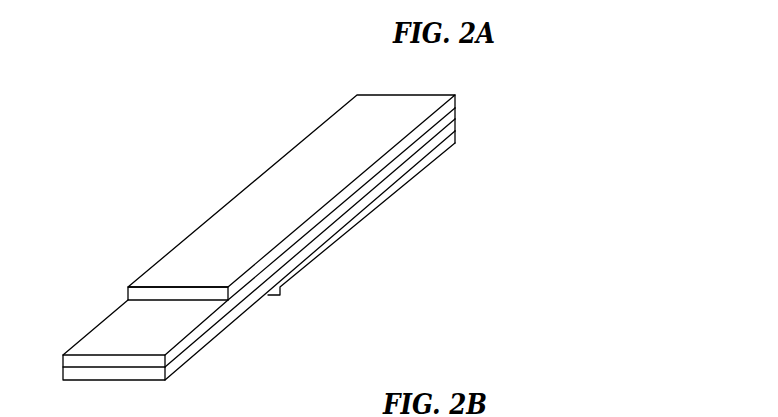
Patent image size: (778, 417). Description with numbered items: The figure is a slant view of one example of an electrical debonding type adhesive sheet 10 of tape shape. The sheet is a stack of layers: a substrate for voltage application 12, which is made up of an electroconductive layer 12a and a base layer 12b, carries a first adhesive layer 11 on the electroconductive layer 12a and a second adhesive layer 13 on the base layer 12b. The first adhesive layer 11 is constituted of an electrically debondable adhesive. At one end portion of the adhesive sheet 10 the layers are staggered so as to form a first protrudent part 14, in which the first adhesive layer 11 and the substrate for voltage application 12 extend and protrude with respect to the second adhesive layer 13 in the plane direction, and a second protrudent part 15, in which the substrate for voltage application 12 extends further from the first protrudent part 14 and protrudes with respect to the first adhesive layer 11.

The electrical debonding type adhesive sheet 10 is at (183, 208).
The first adhesive layer 11 is at (455, 104).
The substrate for voltage application 12 is at (565, 105).
The electroconductive layer 12a is at (455, 119).
The base layer 12b is at (455, 131).
The second adhesive layer 13 is at (455, 143).
The first protrudent part 14 is at (288, 307).
The second protrudent part 15 is at (248, 346).